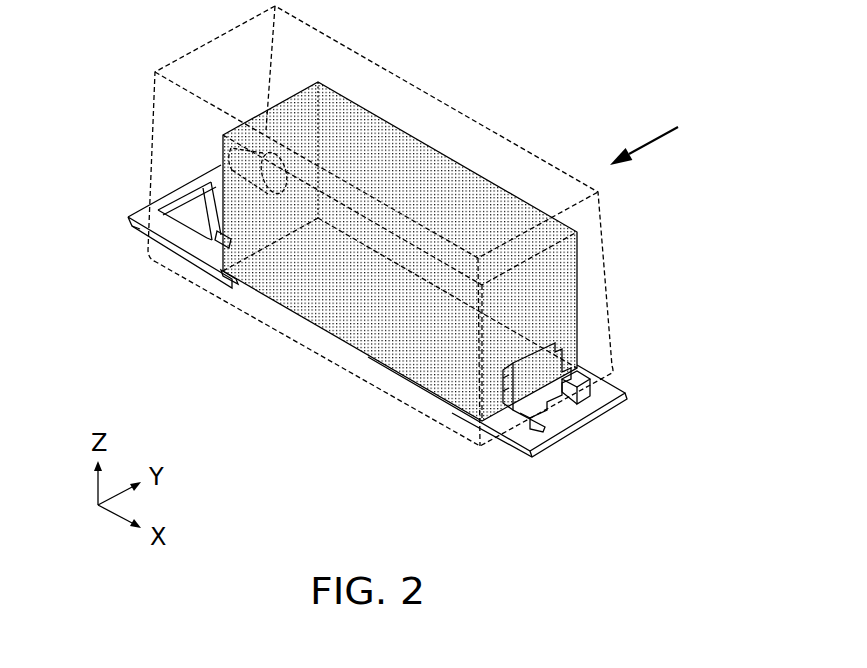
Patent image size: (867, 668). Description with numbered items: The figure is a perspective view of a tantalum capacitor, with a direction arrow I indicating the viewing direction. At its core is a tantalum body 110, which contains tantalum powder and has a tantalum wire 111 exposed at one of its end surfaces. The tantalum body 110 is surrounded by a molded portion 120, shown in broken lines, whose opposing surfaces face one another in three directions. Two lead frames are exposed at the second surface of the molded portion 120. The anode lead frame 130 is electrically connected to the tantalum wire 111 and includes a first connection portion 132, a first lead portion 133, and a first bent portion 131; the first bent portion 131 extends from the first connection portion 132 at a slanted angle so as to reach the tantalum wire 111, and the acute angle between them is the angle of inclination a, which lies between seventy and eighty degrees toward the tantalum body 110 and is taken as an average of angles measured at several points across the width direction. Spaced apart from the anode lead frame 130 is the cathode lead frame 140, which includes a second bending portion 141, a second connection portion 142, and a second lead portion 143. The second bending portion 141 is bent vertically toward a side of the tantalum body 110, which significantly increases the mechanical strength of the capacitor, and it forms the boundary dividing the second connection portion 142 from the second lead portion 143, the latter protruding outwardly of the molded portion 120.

The tantalum body 110 is at (450, 178).
The tantalum wire 111 is at (213, 160).
The molded portion 120 is at (531, 154).
The anode lead frame 130 is at (136, 254).
The first bent portion 131 is at (183, 196).
The first connection portion 132 is at (187, 260).
The first lead portion 133 is at (150, 221).
The cathode lead frame 140 is at (527, 430).
The second bending portion 141 is at (603, 410).
The second connection portion 142 is at (462, 427).
The second lead portion 143 is at (535, 437).
The angle of inclination a is at (236, 232).
The viewing direction I is at (649, 137).